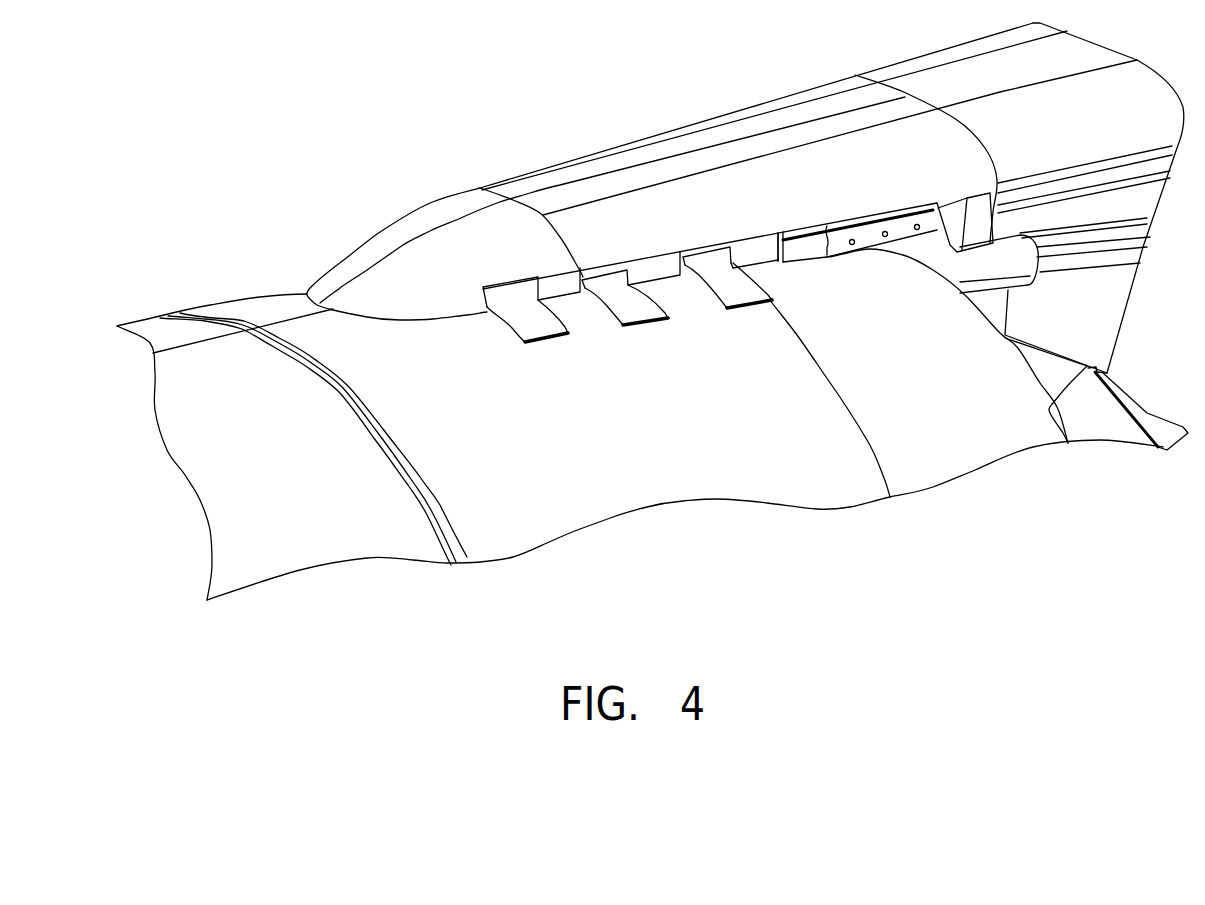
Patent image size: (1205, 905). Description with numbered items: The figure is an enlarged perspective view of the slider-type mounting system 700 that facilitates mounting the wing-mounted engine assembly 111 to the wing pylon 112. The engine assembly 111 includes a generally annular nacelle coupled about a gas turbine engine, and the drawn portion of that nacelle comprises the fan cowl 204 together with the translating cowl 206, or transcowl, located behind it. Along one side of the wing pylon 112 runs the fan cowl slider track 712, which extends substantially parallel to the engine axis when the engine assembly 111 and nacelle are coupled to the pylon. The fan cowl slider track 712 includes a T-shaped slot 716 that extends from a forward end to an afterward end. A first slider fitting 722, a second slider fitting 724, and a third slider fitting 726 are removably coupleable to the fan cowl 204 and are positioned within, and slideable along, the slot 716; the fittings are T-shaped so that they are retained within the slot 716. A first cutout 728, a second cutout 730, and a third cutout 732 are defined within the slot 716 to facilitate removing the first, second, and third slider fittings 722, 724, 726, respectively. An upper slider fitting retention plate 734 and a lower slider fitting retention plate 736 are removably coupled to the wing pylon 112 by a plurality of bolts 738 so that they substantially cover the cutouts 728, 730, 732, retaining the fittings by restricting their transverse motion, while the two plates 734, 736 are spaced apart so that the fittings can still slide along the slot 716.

The wing-mounted engine assembly 111 is at (1015, 573).
The wing pylon 112 is at (381, 114).
The fan cowl 204 is at (753, 482).
The translating cowl 206 is at (947, 453).
The slider-type mounting system 700 is at (625, 138).
The fan cowl slider track 712 is at (797, 243).
The T-shaped slot 716 is at (797, 243).
The first slider fitting 722 is at (523, 310).
The second slider fitting 724 is at (627, 300).
The third slider fitting 726 is at (728, 265).
The first cutout 728 is at (563, 277).
The second cutout 730 is at (664, 255).
The third cutout 732 is at (756, 233).
The upper slider fitting retention plate 734 is at (853, 220).
The lower slider fitting retention plate 736 is at (833, 247).
The bolts 738 is at (914, 223).